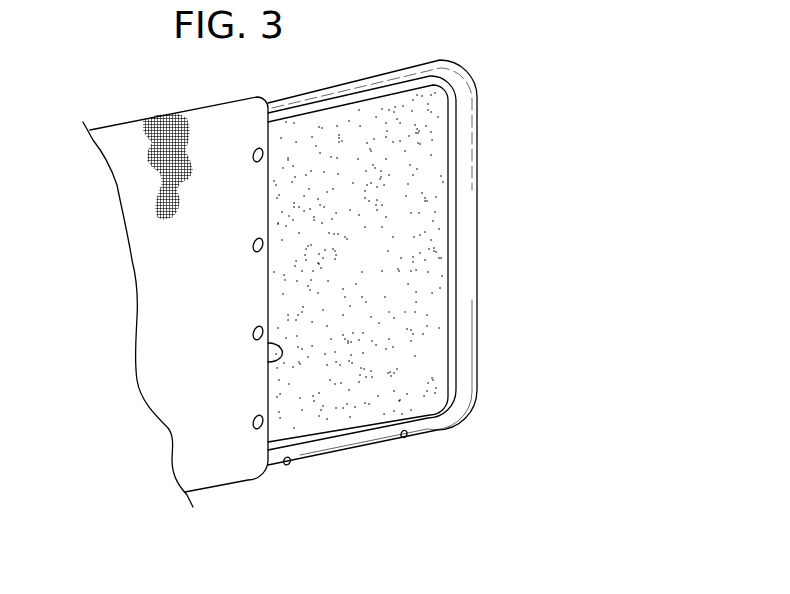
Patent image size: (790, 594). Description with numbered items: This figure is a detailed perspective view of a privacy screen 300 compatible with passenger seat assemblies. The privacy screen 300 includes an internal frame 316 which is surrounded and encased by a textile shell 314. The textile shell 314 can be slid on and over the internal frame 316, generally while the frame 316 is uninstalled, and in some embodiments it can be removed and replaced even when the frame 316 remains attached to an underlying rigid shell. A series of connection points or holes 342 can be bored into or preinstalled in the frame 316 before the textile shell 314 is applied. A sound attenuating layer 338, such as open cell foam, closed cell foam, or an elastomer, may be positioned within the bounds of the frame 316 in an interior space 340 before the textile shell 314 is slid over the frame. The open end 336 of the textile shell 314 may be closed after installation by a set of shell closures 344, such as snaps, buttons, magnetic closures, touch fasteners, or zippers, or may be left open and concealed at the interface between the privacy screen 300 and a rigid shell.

The privacy screen 300 is at (510, 66).
The textile shell 314 is at (150, 128).
The internal frame 316 is at (478, 201).
The open end 336 is at (270, 361).
The sound attenuating layer 338 is at (377, 268).
The interior space 340 is at (348, 432).
The holes 342 is at (289, 464).
The shell closures 344 is at (253, 160).